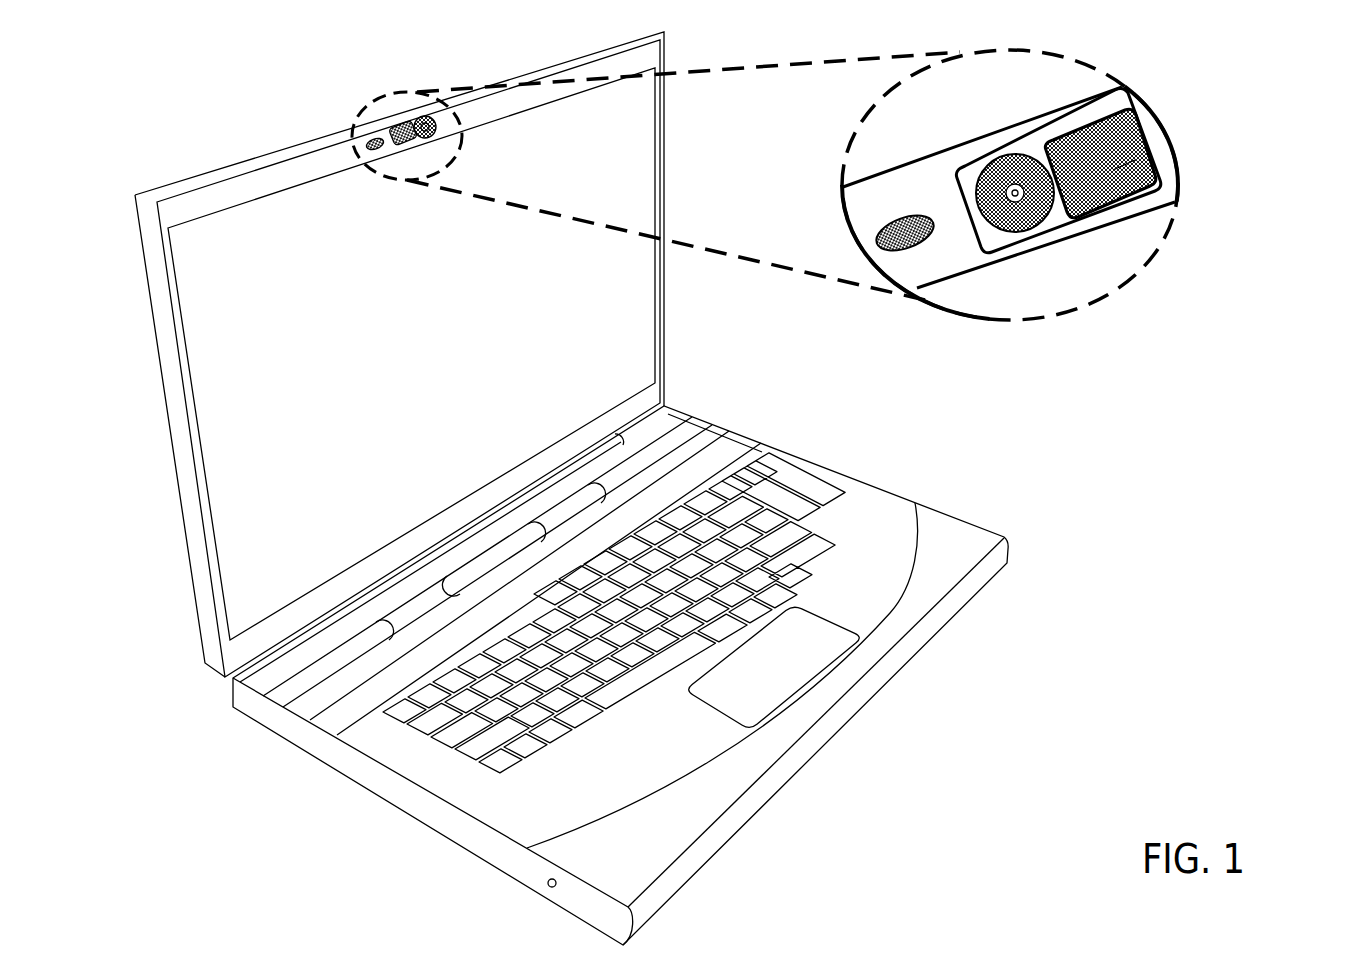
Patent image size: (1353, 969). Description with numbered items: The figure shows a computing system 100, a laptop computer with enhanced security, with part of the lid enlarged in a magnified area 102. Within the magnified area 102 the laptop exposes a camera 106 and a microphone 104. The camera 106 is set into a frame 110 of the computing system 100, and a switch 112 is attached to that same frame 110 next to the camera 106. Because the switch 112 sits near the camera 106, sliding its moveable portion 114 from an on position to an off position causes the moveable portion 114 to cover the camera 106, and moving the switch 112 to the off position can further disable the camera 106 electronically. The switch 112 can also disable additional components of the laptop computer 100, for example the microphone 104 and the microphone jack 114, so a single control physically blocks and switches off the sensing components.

The computing system 100 is at (1098, 530).
The magnified area 102 is at (312, 99).
The microphone 104 is at (873, 238).
The camera 106 is at (987, 167).
The frame 110 is at (1012, 246).
The switch 112 is at (1077, 127).
The moveable portion 114 is at (548, 885).